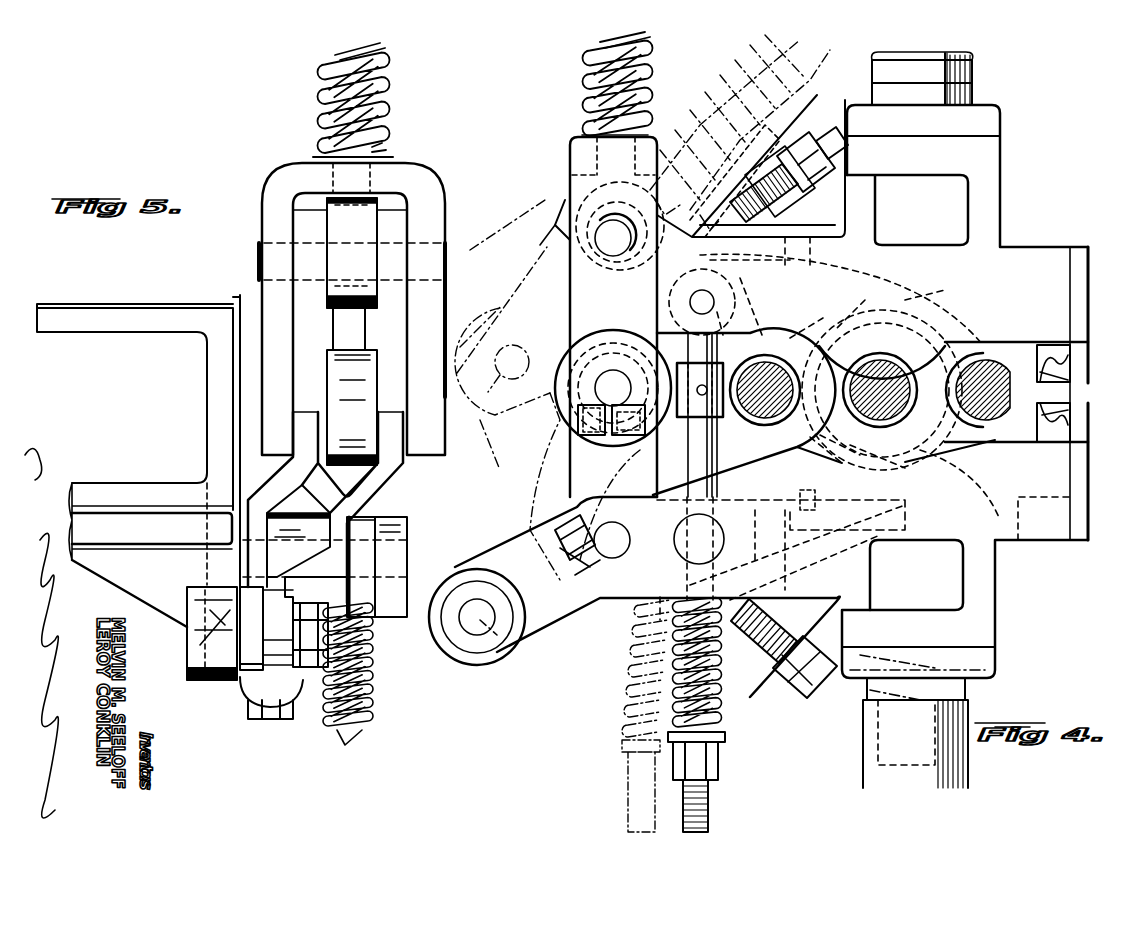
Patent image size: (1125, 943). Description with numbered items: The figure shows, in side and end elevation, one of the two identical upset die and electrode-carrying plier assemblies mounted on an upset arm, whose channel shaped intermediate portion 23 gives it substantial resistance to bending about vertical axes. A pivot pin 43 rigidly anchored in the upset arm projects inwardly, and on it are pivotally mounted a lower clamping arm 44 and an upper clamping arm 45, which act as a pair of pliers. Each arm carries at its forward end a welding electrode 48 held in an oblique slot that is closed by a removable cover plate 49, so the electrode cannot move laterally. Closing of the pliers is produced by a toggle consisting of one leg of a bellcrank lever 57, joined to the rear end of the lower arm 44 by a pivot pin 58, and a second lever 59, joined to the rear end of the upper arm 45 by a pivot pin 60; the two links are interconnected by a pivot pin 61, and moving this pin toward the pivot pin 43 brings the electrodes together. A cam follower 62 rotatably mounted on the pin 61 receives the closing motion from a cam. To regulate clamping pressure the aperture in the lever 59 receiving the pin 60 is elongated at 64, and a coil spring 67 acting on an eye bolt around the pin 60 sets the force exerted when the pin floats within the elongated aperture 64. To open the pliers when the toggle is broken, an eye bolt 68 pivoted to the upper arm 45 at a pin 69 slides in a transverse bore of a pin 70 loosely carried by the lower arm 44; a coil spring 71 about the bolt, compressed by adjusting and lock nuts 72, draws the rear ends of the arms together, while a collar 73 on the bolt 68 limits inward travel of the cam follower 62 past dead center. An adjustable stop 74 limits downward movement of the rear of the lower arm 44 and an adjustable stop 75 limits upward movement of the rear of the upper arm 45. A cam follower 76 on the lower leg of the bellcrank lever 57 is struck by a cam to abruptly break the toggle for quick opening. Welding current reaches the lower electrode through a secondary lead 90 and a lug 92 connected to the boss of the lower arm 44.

In FIG. 5, the channel shaped intermediate portion 23 is at (100, 315).
In FIG. 4, the pivot pin 43 is at (895, 378).
In FIG. 4, the lower clamping arm 44 is at (995, 578).
In FIG. 4, the upper clamping arm 45 is at (1000, 245).
In FIG. 4, the welding electrode 48 is at (1068, 358).
In FIG. 4, the removable cover plate 49 is at (1080, 255).
In FIG. 5, the bellcrank lever 57 is at (240, 587).
In FIG. 4, the bellcrank lever 57 is at (565, 607).
In FIG. 5, the pivot pin 58 is at (405, 555).
In FIG. 4, the pivot pin 58 is at (612, 560).
In FIG. 5, the lever 59 is at (435, 205).
In FIG. 4, the lever 59 is at (570, 300).
In FIG. 5, the pivot pin 60 is at (260, 255).
In FIG. 4, the pivot pin 60 is at (600, 232).
In FIG. 5, the pivot pin 61 is at (258, 408).
In FIG. 4, the pivot pin 61 is at (568, 412).
In FIG. 5, the cam follower 62 is at (340, 375).
In FIG. 4, the cam follower 62 is at (612, 386).
In FIG. 4, the elongated aperture 64 is at (605, 222).
In FIG. 5, the coil spring 67 is at (318, 72).
In FIG. 4, the coil spring 67 is at (645, 95).
In FIG. 4, the eye bolt 68 is at (712, 460).
In FIG. 4, the pin 69 is at (715, 302).
In FIG. 4, the pin 70 is at (715, 530).
In FIG. 5, the coil spring 71 is at (370, 710).
In FIG. 4, the coil spring 71 is at (722, 717).
In FIG. 4, the adjusting and lock nuts 72 is at (728, 762).
In FIG. 4, the collar 73 is at (680, 418).
In FIG. 5, the adjustable stop 74 is at (248, 712).
In FIG. 4, the adjustable stop 74 is at (635, 690).
In FIG. 4, the adjustable stop 75 is at (775, 165).
In FIG. 5, the cam follower 76 is at (190, 648).
In FIG. 4, the cam follower 76 is at (445, 645).
In FIG. 4, the secondary lead 90 is at (970, 770).
In FIG. 4, the lug 92 is at (988, 666).